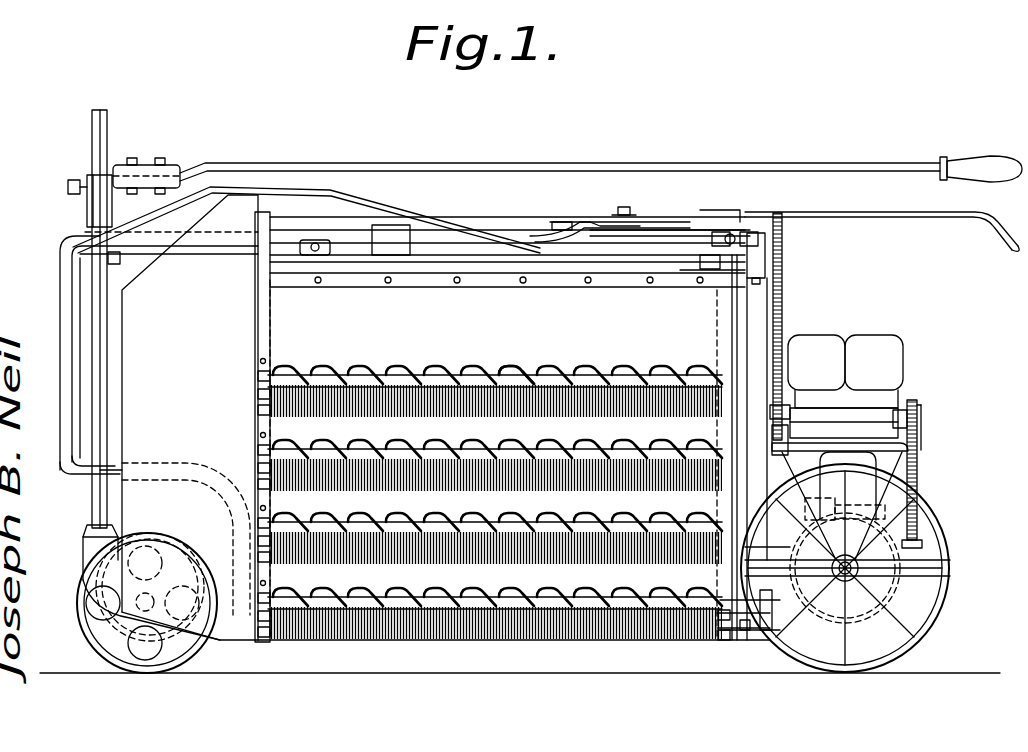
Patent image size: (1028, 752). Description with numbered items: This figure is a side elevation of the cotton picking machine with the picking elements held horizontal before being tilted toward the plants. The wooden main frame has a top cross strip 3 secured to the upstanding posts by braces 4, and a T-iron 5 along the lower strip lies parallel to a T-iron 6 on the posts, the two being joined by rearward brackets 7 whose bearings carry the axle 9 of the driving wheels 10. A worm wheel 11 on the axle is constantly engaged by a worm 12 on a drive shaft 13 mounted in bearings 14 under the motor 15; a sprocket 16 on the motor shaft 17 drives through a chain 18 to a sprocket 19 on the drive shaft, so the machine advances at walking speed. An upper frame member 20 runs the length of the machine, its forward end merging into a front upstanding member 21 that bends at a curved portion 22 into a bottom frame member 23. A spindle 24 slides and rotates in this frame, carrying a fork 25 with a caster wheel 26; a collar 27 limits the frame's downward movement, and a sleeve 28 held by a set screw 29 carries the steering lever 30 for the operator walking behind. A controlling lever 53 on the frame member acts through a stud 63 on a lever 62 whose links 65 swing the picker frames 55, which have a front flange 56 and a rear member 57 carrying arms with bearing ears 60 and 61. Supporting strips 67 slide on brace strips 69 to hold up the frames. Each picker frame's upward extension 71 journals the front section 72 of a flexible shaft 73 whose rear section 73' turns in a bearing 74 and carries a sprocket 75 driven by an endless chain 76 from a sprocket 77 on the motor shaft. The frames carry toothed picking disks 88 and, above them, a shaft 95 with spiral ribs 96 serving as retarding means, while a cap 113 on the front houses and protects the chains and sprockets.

The top cross strip 3 is at (762, 262).
The braces 4 is at (757, 342).
The T-iron 5 is at (778, 632).
The T-iron 6 is at (800, 462).
The brackets 7 is at (812, 490).
The axle 9 is at (855, 574).
The rear or driving wheels 10 is at (935, 628).
The worm wheel 11 is at (905, 566).
The worm 12 is at (836, 505).
The drive shaft 13 is at (880, 512).
The bearings 14 is at (880, 468).
The motor 15 is at (890, 336).
The sprocket 16 is at (917, 403).
The motor shaft 17 is at (920, 416).
The chain 18 is at (922, 440).
The sprocket 19 is at (924, 530).
The upper frame member 20 is at (517, 228).
The front upstanding member 21 is at (62, 292).
The curved portion 22 is at (124, 464).
The bottom frame member 23 is at (746, 632).
The spindle 24 is at (107, 148).
The fork 25 is at (112, 540).
The caster wheel 26 is at (124, 655).
The collar 27 is at (118, 268).
The sleeve 28 is at (87, 206).
The set screw 29 is at (68, 184).
The steering lever 30 is at (272, 165).
The controlling lever 53 is at (560, 222).
The picker frames 55 is at (430, 276).
The flange 56 is at (282, 238).
The rear member 57 is at (722, 272).
The ears 60 is at (722, 642).
The ears 61 is at (722, 622).
The lever 62 is at (590, 226).
The stud 63 is at (628, 208).
The links 65 is at (640, 228).
The supporting strips 67 is at (690, 268).
The brace strips 69 is at (413, 213).
The upwardly extended front end portion 71 is at (313, 238).
The front section 72 is at (330, 243).
The flexible shaft 73 is at (507, 279).
The rear section 73' is at (751, 189).
The bearing 74 is at (760, 236).
The sprocket 75 is at (782, 225).
The endless chain 76 is at (784, 302).
The sprocket 77 is at (782, 402).
The picking disks 88 is at (560, 385).
The shaft 95 is at (440, 380).
The spiral ribs 96 is at (500, 374).
The cap 113 is at (190, 417).